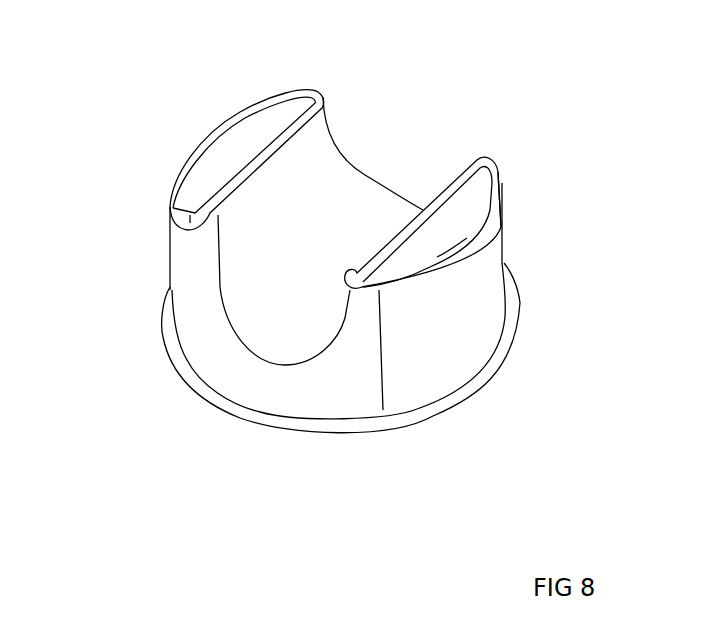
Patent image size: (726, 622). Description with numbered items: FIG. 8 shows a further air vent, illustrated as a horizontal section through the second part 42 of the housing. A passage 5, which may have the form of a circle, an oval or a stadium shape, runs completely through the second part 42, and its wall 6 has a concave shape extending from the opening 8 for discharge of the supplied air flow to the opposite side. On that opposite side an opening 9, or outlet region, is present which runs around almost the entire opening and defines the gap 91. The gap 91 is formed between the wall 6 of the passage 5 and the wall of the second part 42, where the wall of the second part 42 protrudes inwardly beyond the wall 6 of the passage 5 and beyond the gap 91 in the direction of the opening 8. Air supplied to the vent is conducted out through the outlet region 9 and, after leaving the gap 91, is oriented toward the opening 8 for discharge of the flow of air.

The passage 5 is at (480, 126).
The wall 6 is at (292, 297).
The opening 8 is at (461, 109).
The opening 9 is at (221, 216).
The gap 91 is at (350, 300).
The second part 42 is at (500, 183).